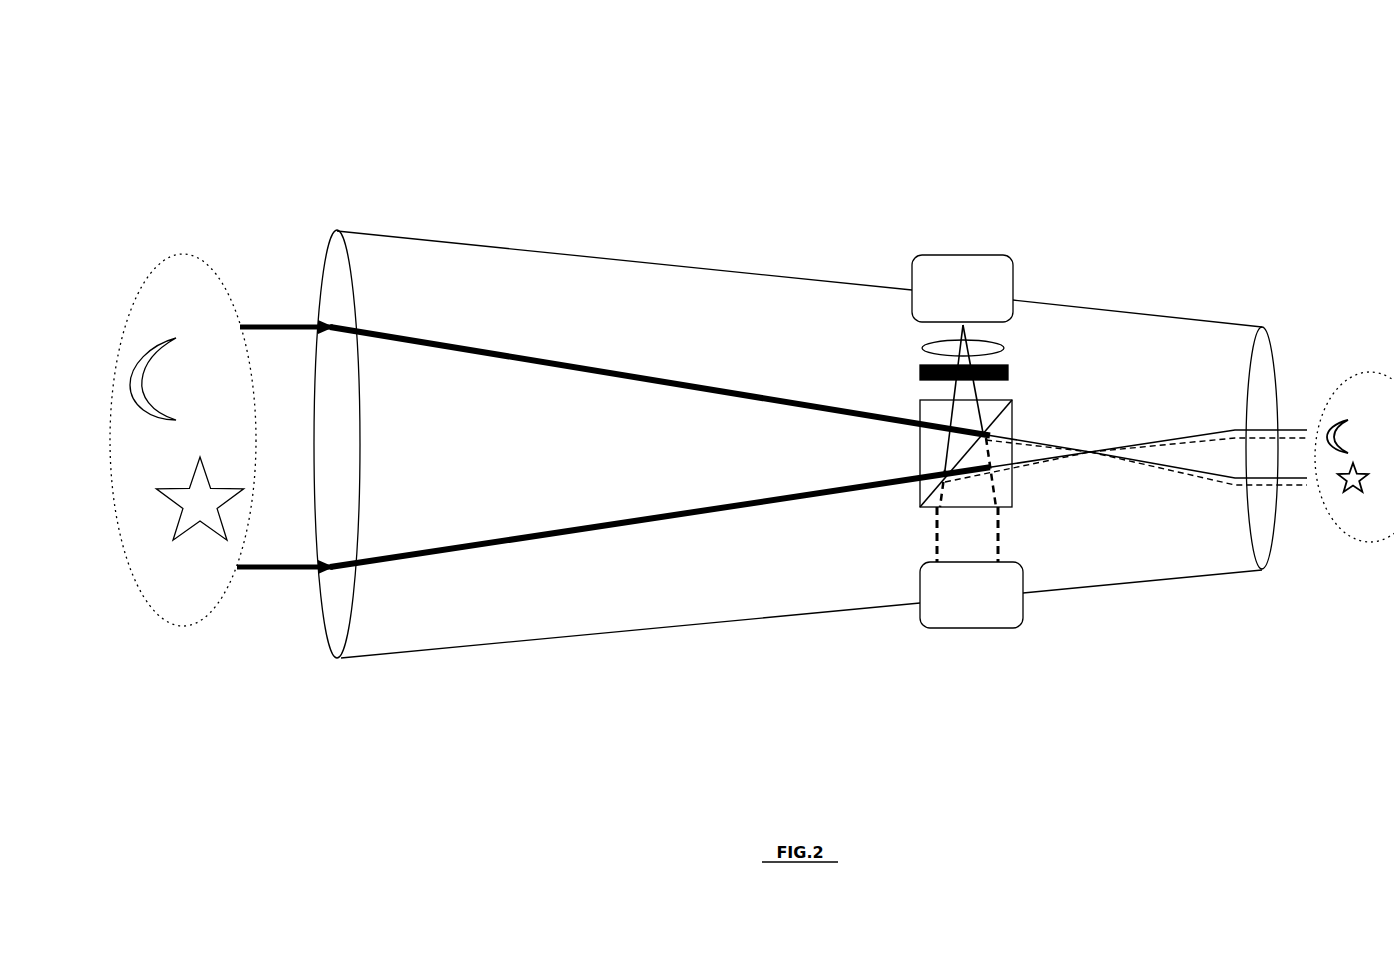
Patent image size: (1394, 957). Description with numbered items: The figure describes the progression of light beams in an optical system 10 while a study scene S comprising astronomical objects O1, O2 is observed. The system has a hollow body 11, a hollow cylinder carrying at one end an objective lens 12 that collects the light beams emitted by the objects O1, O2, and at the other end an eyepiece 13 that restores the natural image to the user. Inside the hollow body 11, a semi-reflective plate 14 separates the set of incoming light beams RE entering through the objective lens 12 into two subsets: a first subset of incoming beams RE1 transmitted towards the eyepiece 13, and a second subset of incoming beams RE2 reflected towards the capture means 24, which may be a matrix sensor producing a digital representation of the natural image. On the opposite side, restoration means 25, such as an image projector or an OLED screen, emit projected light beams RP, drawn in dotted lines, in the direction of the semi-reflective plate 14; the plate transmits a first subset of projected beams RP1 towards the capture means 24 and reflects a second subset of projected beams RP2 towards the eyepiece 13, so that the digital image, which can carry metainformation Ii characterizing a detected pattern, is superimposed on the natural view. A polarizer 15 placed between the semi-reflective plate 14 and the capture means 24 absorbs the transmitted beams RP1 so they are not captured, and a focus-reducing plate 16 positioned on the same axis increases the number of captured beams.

The optical system 10 is at (386, 146).
The hollow body 11 is at (400, 660).
The objective lens 12 is at (324, 290).
The eyepiece 13 is at (1268, 348).
The semi-reflective plate 14 is at (925, 458).
The polarizer 15 is at (920, 372).
The focus-reducing plate 16 is at (1005, 350).
The capture means 24 is at (962, 288).
The restoration means 25 is at (971, 595).
The astronomical object O1 is at (140, 348).
The astronomical object O2 is at (174, 503).
The study scene S is at (180, 627).
The incoming light beams RE is at (647, 385).
The first subset of incoming light beams RE1 is at (1160, 454).
The second subset of incoming light beams RE2 is at (953, 338).
The projected light beams RP is at (947, 522).
The first subset of projected beams RP1 is at (960, 418).
The second subset of projected beams RP2 is at (1190, 453).
The metainformation Ii is at (1354, 457).